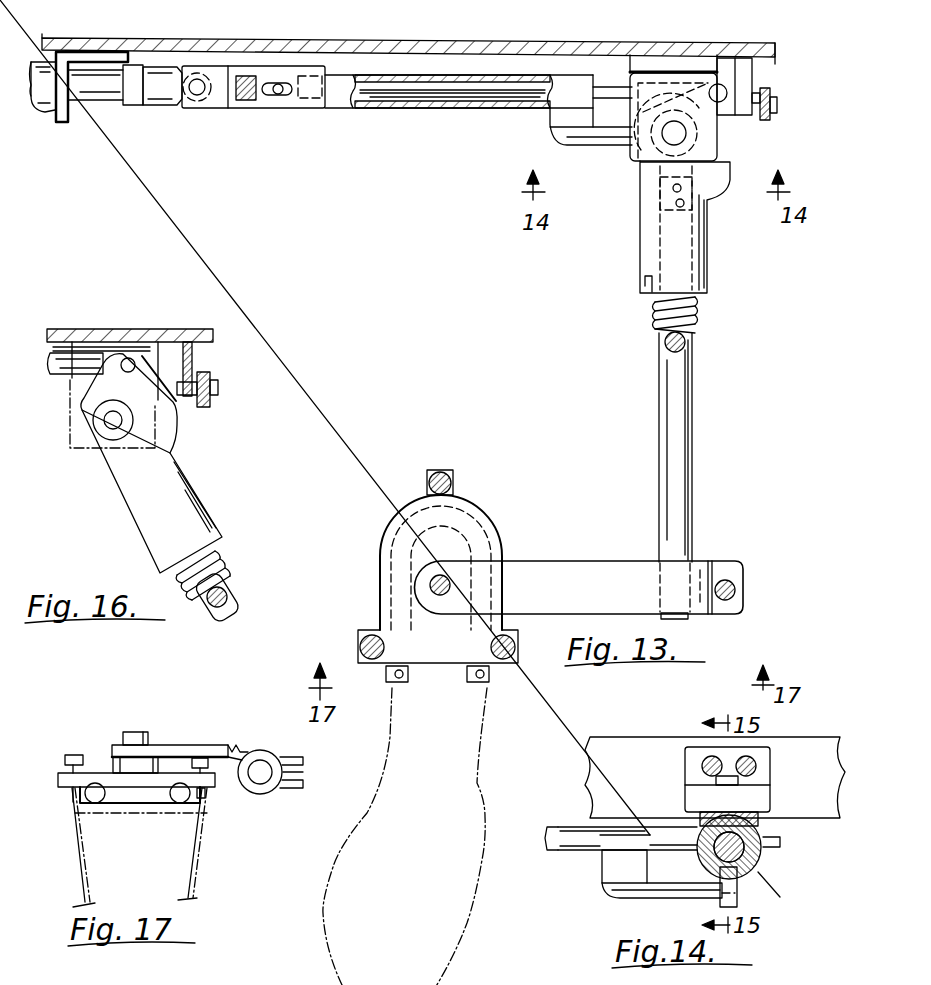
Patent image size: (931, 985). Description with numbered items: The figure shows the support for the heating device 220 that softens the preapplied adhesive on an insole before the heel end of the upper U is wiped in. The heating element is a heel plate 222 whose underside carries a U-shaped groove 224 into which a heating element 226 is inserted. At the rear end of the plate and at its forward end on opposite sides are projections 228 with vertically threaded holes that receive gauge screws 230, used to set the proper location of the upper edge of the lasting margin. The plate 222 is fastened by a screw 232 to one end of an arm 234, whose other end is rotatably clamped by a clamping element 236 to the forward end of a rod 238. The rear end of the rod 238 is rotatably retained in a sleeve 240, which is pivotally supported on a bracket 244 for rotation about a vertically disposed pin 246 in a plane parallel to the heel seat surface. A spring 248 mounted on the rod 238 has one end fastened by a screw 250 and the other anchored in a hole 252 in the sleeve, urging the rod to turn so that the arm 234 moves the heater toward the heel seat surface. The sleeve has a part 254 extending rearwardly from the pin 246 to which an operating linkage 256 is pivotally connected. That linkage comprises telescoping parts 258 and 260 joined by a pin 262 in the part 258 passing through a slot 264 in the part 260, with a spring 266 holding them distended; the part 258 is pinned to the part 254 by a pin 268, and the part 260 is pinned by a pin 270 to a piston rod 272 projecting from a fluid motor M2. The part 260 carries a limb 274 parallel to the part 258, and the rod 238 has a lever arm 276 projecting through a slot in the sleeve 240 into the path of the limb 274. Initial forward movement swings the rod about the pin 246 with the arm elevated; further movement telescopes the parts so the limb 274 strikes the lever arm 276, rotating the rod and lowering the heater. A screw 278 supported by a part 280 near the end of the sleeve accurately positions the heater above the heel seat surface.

In FIG. 13, the heating device 220 is at (472, 550).
In FIG. 13, the heel plate 222 is at (500, 538).
In FIG. 17, the heel plate 222 is at (90, 773).
In FIG. 17, the U-shaped groove 224 is at (180, 773).
In FIG. 17, the heating element 226 is at (203, 803).
In FIG. 13, the projections 228 is at (358, 633).
In FIG. 17, the projections 228 is at (60, 783).
In FIG. 13, the gauge screws 230 is at (441, 472).
In FIG. 17, the gauge screws 230 is at (70, 757).
In FIG. 13, the screw 232 is at (433, 584).
In FIG. 17, the screw 232 is at (133, 732).
In FIG. 13, the arm 234 is at (567, 567).
In FIG. 17, the arm 234 is at (163, 748).
In FIG. 13, the clamping element 236 is at (732, 557).
In FIG. 13, the rod 238 is at (678, 517).
In FIG. 14, the rod 238 is at (760, 870).
In FIG. 13, the sleeve 240 is at (708, 267).
In FIG. 16, the sleeve 240 is at (132, 495).
In FIG. 14, the sleeve 240 is at (757, 883).
In FIG. 13, the bracket 244 is at (686, 62).
In FIG. 16, the bracket 244 is at (80, 343).
In FIG. 14, the bracket 244 is at (715, 777).
In FIG. 13, the pin 246 is at (680, 135).
In FIG. 16, the pin 246 is at (112, 425).
In FIG. 13, the spring 248 is at (655, 315).
In FIG. 16, the spring 248 is at (220, 573).
In FIG. 13, the screw 250 is at (688, 341).
In FIG. 16, the screw 250 is at (232, 590).
In FIG. 13, the hole 252 is at (646, 282).
In FIG. 16, the part 254 is at (115, 348).
In FIG. 13, the operating linkage 256 is at (392, 121).
In FIG. 16, the operating linkage 256 is at (60, 388).
In FIG. 13, the telescoping part 258 is at (518, 90).
In FIG. 14, the telescoping part 258 is at (663, 837).
In FIG. 13, the telescoping part 260 is at (452, 108).
In FIG. 14, the telescoping part 260 is at (573, 845).
In FIG. 13, the pin 262 is at (277, 97).
In FIG. 13, the slot 264 is at (267, 97).
In FIG. 13, the spring 266 is at (246, 75).
In FIG. 16, the pin 268 is at (133, 353).
In FIG. 13, the pin 270 is at (197, 97).
In FIG. 13, the piston rod 272 is at (110, 92).
In FIG. 13, the limb 274 is at (604, 148).
In FIG. 14, the limb 274 is at (622, 897).
In FIG. 14, the lever arm 276 is at (720, 897).
In FIG. 13, the screw 278 is at (772, 99).
In FIG. 16, the screw 278 is at (218, 400).
In FIG. 16, the part 280 is at (197, 363).
In FIG. 13, the fluid motor M2 is at (50, 120).
In FIG. 17, the upper u is at (200, 873).